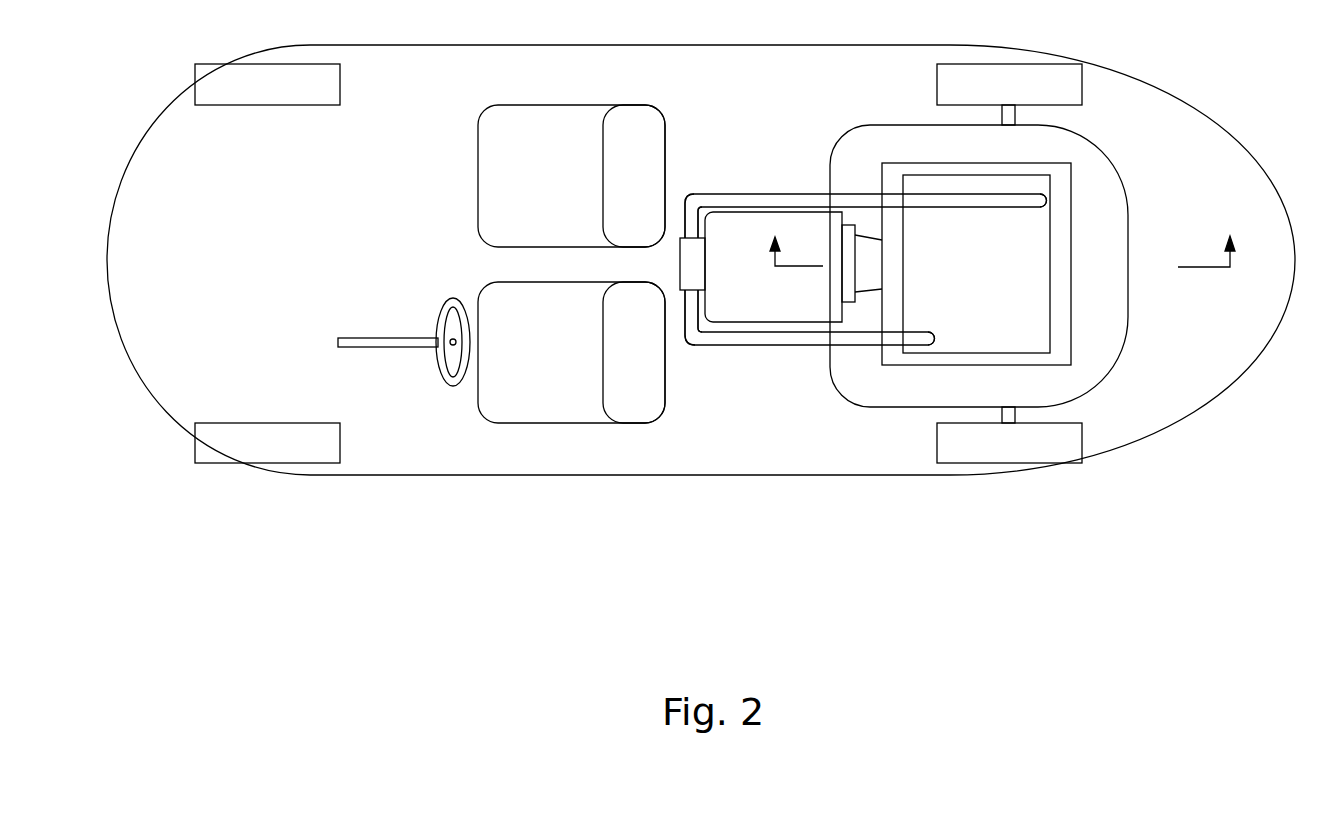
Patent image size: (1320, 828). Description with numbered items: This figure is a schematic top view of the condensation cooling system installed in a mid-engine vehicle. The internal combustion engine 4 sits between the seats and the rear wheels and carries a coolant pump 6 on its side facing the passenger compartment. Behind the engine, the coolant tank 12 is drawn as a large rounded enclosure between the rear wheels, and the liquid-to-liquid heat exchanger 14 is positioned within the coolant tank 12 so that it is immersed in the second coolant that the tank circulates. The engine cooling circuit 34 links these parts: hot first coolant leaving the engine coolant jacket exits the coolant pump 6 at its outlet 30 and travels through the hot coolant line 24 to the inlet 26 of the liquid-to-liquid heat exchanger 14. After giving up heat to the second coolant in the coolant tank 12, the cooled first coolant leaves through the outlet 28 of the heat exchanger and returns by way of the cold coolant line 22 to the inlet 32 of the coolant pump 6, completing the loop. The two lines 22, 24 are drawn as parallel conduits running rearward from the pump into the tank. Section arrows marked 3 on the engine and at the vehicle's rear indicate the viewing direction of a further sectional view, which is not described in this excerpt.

The engine cooling circuit 34 is at (801, 100).
The internal combustion engine 4 is at (750, 227).
The coolant pump 6 is at (680, 263).
The cold coolant line 22 is at (797, 194).
The hot coolant line 24 is at (780, 347).
The inlet 32 is at (685, 238).
The outlet 30 is at (686, 292).
The outlet 28 is at (1042, 196).
The inlet 26 is at (928, 347).
The coolant tank 12 is at (1071, 205).
The liquid-to-liquid heat exchanger 14 is at (1050, 333).
The section line 3 is at (1001, 240).